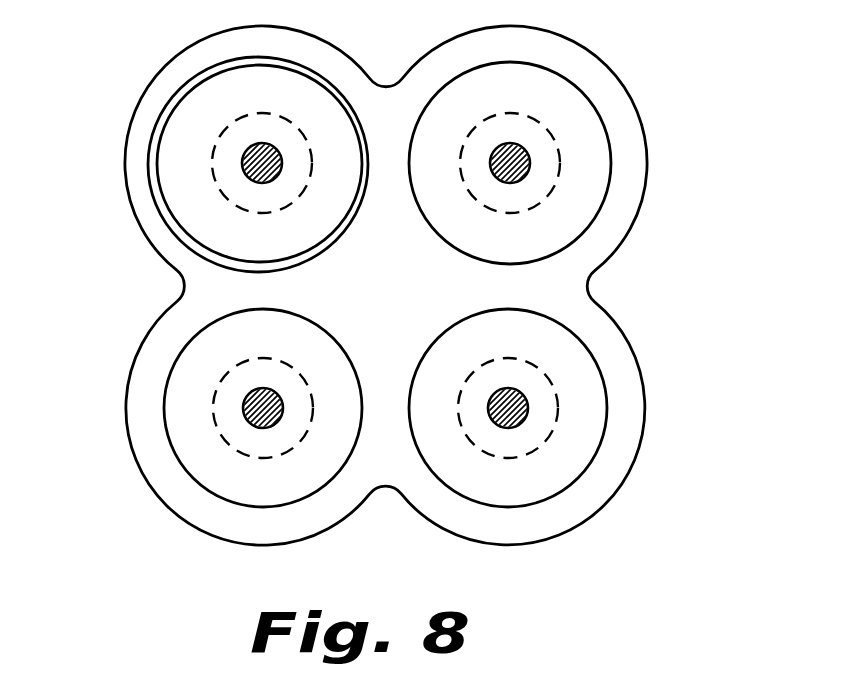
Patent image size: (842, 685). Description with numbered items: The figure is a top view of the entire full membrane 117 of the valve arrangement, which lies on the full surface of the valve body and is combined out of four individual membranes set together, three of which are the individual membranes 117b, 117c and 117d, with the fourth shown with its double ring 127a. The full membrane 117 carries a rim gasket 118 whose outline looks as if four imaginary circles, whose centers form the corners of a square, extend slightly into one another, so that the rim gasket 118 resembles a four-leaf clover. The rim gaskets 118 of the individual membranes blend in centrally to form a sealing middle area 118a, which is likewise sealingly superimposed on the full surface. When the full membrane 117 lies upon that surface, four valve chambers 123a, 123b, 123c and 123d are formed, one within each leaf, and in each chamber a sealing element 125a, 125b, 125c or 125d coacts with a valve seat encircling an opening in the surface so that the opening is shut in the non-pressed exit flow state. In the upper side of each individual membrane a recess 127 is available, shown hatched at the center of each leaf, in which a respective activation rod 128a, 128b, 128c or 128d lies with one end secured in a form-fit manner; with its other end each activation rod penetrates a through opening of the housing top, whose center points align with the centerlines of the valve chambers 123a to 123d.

The full membrane 117 is at (736, 149).
The individual membrane 117b is at (175, 425).
The individual membrane 117c is at (594, 413).
The individual membrane 117d is at (622, 190).
The rim gasket 118 is at (172, 240).
The sealing middle area 118a is at (472, 290).
The valve chamber 123a is at (203, 118).
The valve chamber 123b is at (193, 398).
The valve chamber 123c is at (481, 476).
The valve chamber 123d is at (567, 221).
The sealing element 125a is at (272, 150).
The sealing element 125b is at (231, 411).
The sealing element 125c is at (540, 427).
The sealing element 125d is at (552, 140).
The recess 127 is at (281, 137).
The sleeve 127a is at (175, 160).
The activation rod 128a is at (252, 172).
The activation rod 128b is at (297, 345).
The activation rod 128c is at (532, 345).
The activation rod 128d is at (533, 227).